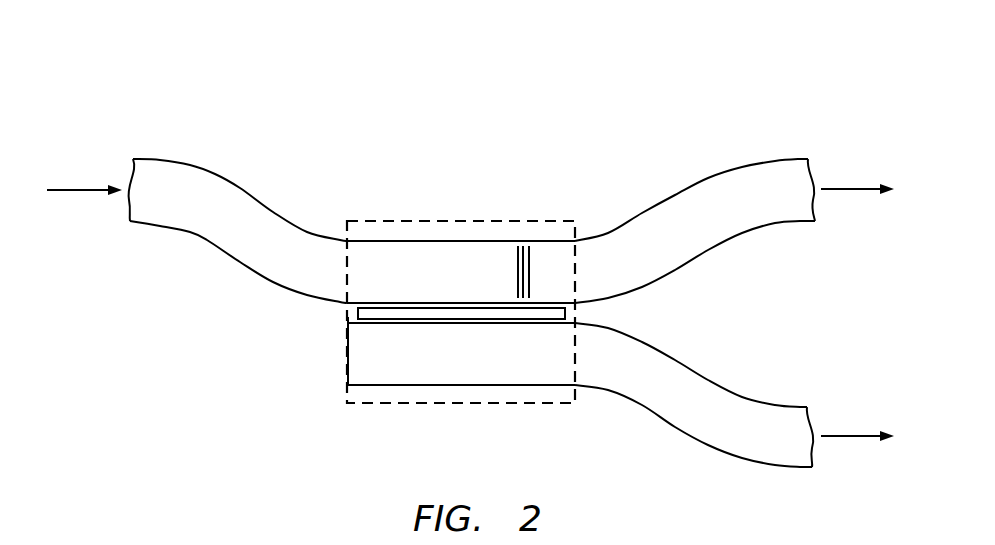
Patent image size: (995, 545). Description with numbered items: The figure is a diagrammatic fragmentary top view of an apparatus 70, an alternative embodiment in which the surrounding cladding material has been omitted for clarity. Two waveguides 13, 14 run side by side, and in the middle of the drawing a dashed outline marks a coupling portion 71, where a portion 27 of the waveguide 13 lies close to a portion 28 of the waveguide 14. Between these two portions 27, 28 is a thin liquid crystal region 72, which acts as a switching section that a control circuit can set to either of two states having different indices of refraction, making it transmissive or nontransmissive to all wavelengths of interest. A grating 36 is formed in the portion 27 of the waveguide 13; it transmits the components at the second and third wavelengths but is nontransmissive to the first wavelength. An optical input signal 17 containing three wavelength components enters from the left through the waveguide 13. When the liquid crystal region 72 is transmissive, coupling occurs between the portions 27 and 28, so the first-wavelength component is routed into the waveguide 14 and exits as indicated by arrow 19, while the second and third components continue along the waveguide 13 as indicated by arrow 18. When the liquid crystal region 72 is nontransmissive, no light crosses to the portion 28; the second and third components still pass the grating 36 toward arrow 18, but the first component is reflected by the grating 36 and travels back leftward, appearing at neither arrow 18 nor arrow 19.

The apparatus 70 is at (312, 140).
The optical input signal 17 is at (86, 195).
The coupling portion 71 is at (393, 218).
The portion of waveguide 13 27 is at (451, 247).
The portion of waveguide 14 28 is at (452, 380).
The liquid crystal region 72 is at (384, 315).
The grating 36 is at (508, 272).
The waveguide 13 is at (684, 195).
The waveguide 14 is at (684, 432).
The arrow 18 is at (848, 195).
The arrow 19 is at (848, 441).